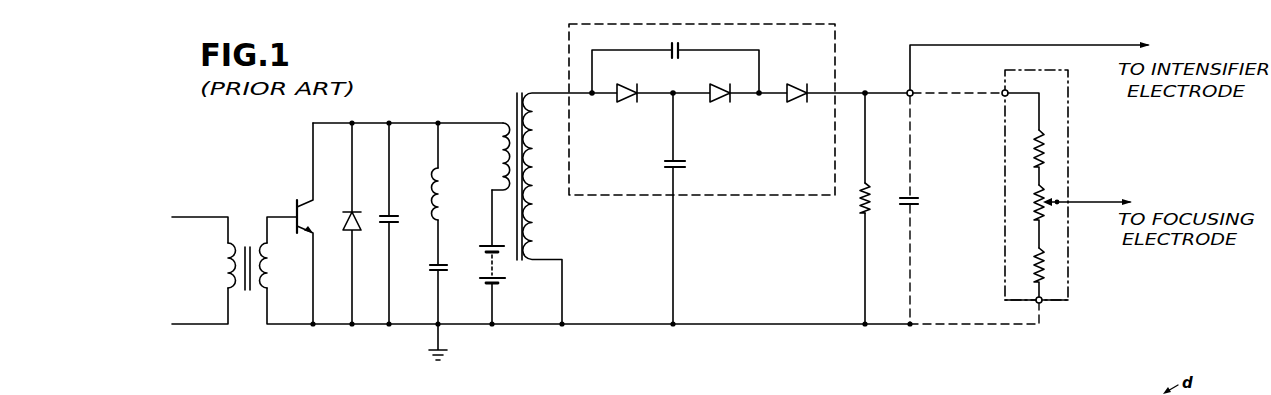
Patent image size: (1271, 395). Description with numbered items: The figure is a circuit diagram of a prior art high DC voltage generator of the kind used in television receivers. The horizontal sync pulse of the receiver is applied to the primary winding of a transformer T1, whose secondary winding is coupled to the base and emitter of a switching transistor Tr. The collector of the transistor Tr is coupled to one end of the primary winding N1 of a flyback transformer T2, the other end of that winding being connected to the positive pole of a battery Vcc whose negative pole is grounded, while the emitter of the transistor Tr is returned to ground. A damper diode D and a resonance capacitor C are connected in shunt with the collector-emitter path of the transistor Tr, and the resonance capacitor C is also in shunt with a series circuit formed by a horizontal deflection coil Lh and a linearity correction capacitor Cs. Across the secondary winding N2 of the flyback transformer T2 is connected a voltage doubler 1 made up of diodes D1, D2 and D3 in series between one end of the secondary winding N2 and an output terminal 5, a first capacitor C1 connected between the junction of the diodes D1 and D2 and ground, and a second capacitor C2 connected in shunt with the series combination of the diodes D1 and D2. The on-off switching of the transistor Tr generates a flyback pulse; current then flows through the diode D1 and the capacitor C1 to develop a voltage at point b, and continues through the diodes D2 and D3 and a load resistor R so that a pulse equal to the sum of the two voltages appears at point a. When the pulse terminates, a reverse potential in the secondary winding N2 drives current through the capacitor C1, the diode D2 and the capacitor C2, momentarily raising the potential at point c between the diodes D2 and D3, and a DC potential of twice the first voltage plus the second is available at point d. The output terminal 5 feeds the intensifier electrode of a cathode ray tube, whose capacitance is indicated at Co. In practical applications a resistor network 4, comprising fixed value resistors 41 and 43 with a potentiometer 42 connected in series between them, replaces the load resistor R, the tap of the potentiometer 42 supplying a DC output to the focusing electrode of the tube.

The transformer T1 is at (245, 235).
The switching transistor Tr is at (294, 202).
The damper diode D is at (355, 211).
The resonance capacitor C is at (392, 212).
The horizontal deflection coil Lh is at (444, 181).
The linearity correction capacitor Cs is at (437, 273).
The primary winding of flyback transformer N1 is at (504, 170).
The battery Vcc is at (476, 268).
The flyback transformer T2 is at (526, 205).
The secondary winding of flyback transformer N2 is at (537, 203).
The voltage doubler 1 is at (838, 52).
The point a is at (583, 88).
The point b is at (671, 90).
The point c is at (758, 100).
The point d is at (867, 88).
The diode D1 is at (627, 100).
The diode D2 is at (718, 100).
The diode D3 is at (790, 85).
The first capacitor C1 is at (684, 163).
The second capacitor C2 is at (680, 50).
The load resistor R is at (858, 205).
The output terminal 5 is at (914, 98).
The capacitance of intensifier electrode Co is at (918, 201).
The resistor network 4 is at (1045, 186).
The fixed value resistor 41 is at (1035, 140).
The potentiometer 42 is at (1035, 195).
The fixed value resistor 43 is at (1035, 258).